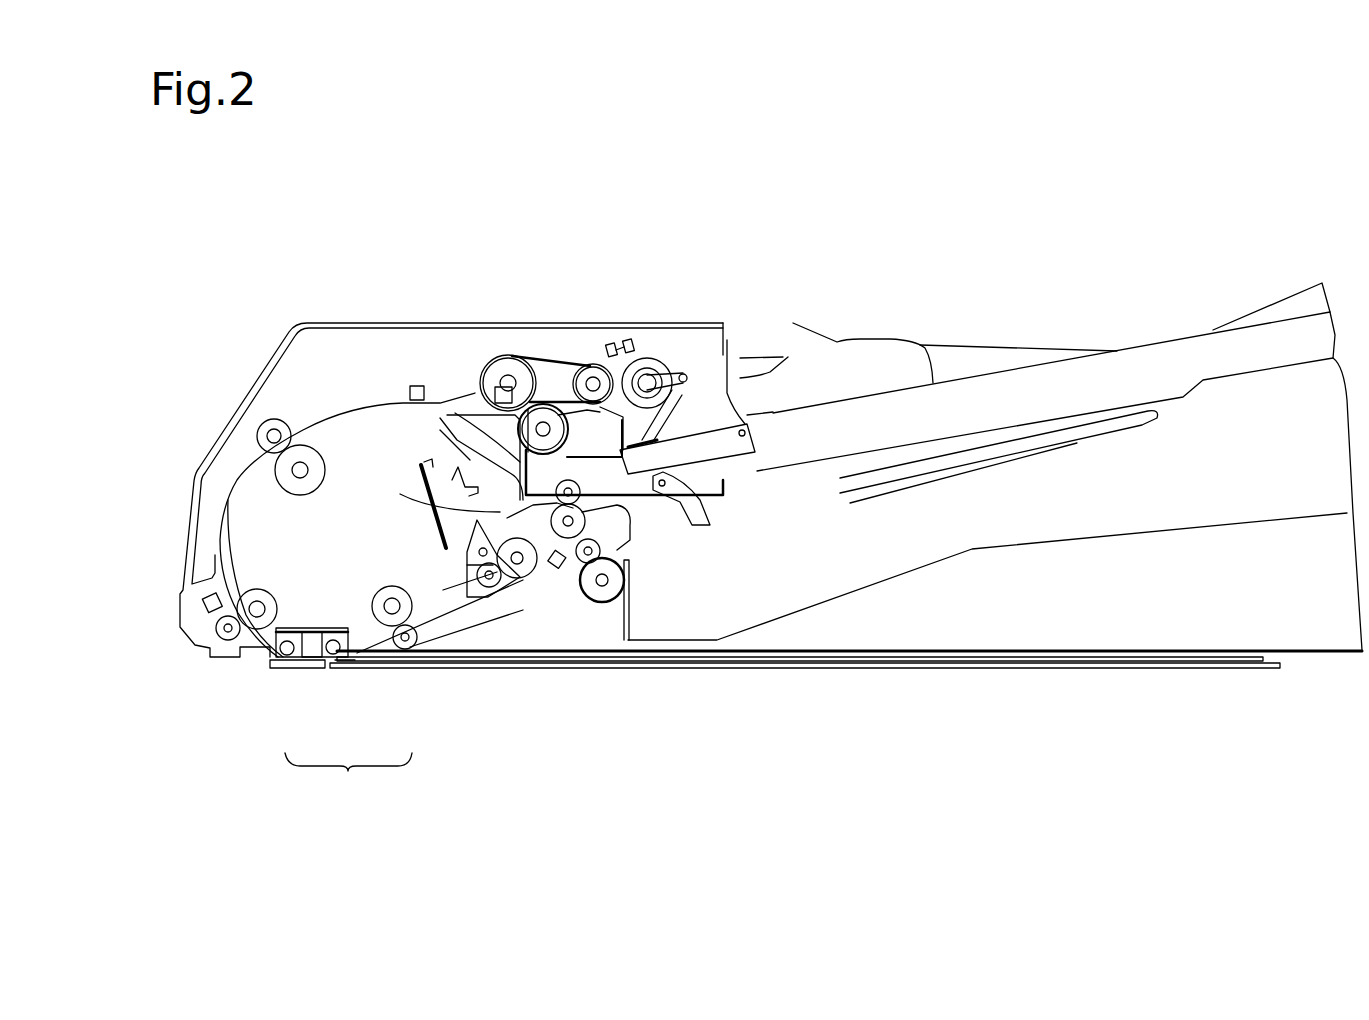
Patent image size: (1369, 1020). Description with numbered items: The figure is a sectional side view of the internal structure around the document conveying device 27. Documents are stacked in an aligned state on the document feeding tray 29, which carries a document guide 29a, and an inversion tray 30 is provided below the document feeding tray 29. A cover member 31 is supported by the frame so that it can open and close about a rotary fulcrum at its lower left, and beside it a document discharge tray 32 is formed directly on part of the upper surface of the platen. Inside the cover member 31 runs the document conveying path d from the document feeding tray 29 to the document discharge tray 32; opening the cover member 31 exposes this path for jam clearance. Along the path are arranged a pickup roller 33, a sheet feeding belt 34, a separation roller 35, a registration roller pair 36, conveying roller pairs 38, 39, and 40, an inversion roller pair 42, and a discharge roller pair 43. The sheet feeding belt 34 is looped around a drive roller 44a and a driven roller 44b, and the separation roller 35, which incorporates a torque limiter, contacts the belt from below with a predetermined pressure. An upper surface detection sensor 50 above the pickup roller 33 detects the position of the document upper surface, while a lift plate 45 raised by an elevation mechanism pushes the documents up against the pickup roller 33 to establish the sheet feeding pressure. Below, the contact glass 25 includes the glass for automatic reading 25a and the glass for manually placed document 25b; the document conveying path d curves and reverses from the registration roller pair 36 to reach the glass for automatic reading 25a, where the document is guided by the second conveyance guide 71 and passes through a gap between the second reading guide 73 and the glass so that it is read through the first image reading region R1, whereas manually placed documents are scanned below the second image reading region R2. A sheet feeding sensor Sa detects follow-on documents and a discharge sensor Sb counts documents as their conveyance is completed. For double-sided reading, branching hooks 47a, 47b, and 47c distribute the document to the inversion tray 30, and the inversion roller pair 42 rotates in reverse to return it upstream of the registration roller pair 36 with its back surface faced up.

The document conveying device 27 is at (472, 242).
The cover member 31 is at (297, 327).
The document conveying path d is at (333, 413).
The registration roller pair 36 is at (262, 422).
The sheet feeding sensor Sa is at (413, 386).
The sheet feeding belt 34 is at (540, 371).
The drive roller 44a is at (500, 372).
The separation roller 35 is at (548, 413).
The driven roller 44b is at (596, 364).
The upper surface detection sensor 50 is at (640, 343).
The pickup roller 33 is at (685, 352).
The lift plate 45 is at (705, 438).
The document guide 29a is at (890, 349).
The document feeding tray 29 is at (1150, 342).
The inversion tray 30 is at (1077, 443).
The document discharge tray 32 is at (933, 560).
The inversion roller pair 42 is at (585, 521).
The branching hook 47c is at (437, 499).
The branching hook 47a is at (447, 590).
The branching hook 47b is at (512, 582).
The conveying roller pair 40 is at (572, 580).
The discharge sensor Sb is at (556, 574).
The discharge roller pair 43 is at (602, 590).
The conveying roller pair 39 is at (383, 600).
The second conveyance guide 71 is at (287, 627).
The second reading guide 73 is at (308, 641).
The conveying roller pair 38 is at (226, 640).
The glass for automatic reading 25a is at (283, 670).
The glass for manually placed document 25b is at (447, 670).
The contact glass 25 is at (348, 780).
The first image reading region R1 is at (303, 667).
The second image reading region R2 is at (836, 657).